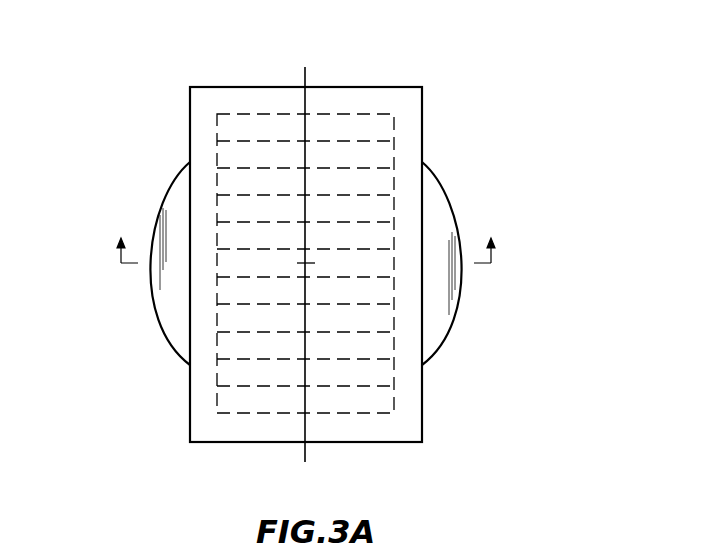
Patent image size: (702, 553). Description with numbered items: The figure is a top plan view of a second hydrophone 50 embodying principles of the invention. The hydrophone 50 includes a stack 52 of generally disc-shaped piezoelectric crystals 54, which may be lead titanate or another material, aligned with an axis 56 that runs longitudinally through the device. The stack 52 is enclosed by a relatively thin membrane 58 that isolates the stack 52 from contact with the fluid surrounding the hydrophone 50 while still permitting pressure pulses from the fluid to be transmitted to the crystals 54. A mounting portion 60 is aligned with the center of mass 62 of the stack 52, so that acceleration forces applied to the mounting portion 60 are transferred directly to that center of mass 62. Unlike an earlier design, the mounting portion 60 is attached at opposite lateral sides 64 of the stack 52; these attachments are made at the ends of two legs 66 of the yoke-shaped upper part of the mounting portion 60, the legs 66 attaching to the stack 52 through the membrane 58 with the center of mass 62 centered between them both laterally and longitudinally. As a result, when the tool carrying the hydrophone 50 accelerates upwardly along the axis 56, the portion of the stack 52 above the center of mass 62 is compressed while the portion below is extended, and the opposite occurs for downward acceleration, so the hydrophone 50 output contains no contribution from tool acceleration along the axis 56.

The hydrophone 50 is at (497, 92).
The stack 52 is at (238, 113).
The piezoelectric crystals 54 is at (219, 142).
The axis 56 is at (307, 450).
The membrane 58 is at (190, 419).
The mounting portion 60 is at (450, 325).
The center of mass 62 is at (302, 263).
The lateral sides 64 is at (192, 220).
The legs 66 is at (436, 175).